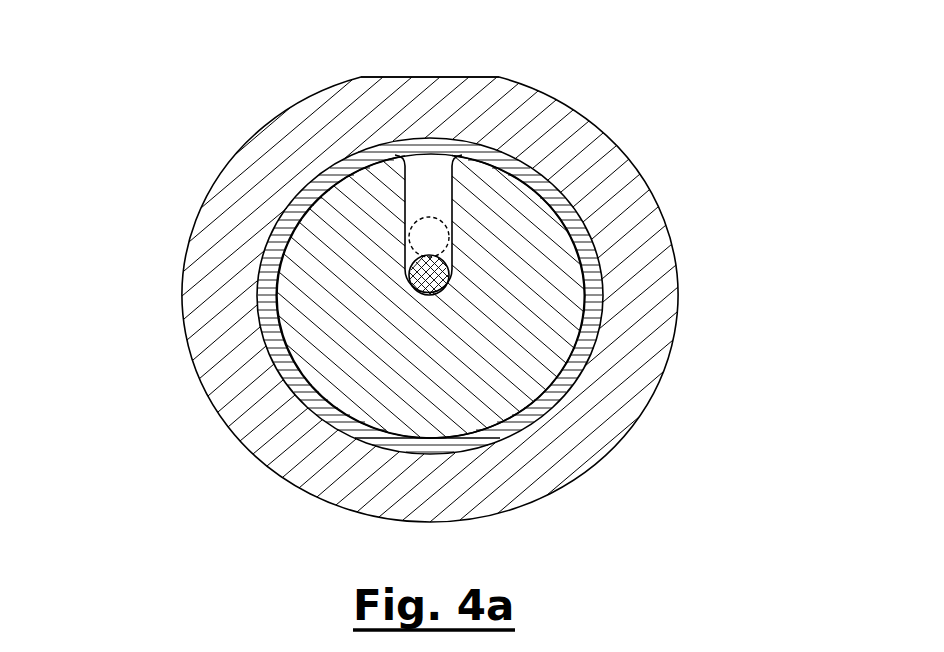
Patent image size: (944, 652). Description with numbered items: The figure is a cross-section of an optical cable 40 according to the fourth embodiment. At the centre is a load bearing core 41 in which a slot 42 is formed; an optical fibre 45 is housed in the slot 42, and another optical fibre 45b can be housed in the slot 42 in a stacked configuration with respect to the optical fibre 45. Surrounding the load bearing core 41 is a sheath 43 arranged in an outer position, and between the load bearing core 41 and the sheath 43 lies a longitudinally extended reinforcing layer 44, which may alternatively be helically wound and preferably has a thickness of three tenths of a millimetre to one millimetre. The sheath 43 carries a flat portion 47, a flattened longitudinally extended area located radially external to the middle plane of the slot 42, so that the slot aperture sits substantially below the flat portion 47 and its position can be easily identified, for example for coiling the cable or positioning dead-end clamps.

The cable 40 is at (410, 269).
The load bearing core 41 is at (570, 307).
The slot 42 is at (413, 197).
The sheath 43 is at (642, 215).
The reinforcing layer 44 is at (532, 413).
The optical fibre 45 is at (427, 280).
The optical fibre 45b is at (428, 233).
The flat portion 47 is at (442, 77).